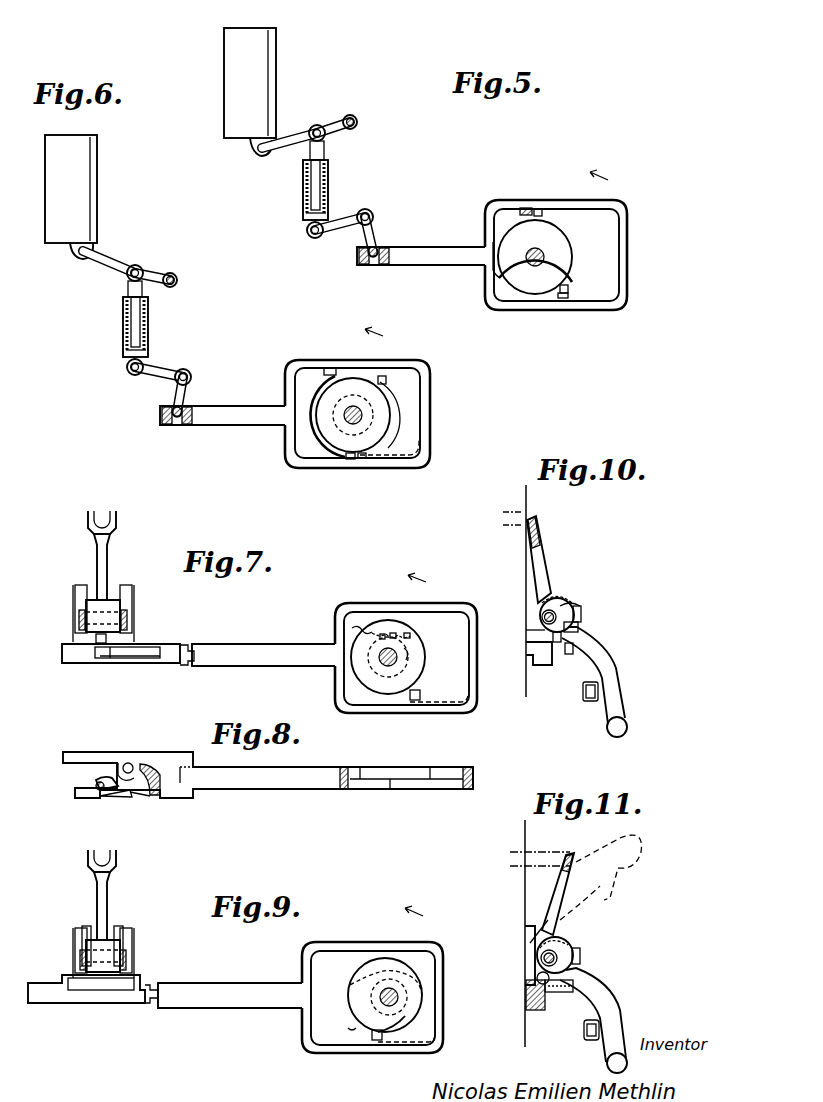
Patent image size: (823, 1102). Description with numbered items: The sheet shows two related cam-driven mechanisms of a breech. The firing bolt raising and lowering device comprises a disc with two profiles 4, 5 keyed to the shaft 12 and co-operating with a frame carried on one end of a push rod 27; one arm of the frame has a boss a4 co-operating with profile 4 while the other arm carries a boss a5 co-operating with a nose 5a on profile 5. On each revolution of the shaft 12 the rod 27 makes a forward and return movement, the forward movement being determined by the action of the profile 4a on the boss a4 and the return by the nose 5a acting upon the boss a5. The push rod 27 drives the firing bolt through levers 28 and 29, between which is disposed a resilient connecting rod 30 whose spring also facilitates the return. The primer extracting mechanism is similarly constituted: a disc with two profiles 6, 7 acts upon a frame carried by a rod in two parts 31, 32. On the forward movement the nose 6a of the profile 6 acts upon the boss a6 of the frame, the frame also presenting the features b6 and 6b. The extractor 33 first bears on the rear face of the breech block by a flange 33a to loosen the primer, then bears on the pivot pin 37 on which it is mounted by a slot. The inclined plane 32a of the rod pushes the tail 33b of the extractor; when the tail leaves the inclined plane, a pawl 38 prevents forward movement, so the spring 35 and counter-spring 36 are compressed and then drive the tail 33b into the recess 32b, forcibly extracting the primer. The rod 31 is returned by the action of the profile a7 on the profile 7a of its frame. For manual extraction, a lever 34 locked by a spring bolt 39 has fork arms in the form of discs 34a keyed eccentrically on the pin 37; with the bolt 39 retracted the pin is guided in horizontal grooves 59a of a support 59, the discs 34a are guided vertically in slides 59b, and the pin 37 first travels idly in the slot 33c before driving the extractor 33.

In FIG. 6, the profile 4 is at (390, 396).
In FIG. 5, the profile 4 is at (566, 230).
In FIG. 6, the boss a4 is at (330, 368).
In FIG. 5, the boss a4 is at (526, 208).
In FIG. 6, the profile 4a is at (382, 376).
In FIG. 5, the profile 4a is at (540, 209).
In FIG. 6, the profile 5 is at (380, 415).
In FIG. 5, the profile 5 is at (565, 262).
In FIG. 6, the nose 5a is at (349, 459).
In FIG. 5, the nose 5a is at (568, 288).
In FIG. 6, the boss a5 is at (364, 458).
In FIG. 5, the boss a5 is at (564, 298).
In FIG. 7, the profile 6 is at (402, 670).
In FIG. 7, the boss a6 is at (382, 634).
In FIG. 7, the nose 6a is at (394, 633).
In FIG. 7, the profile boss b6 is at (410, 633).
In FIG. 7, the profile 6b is at (410, 654).
In FIG. 7, the profile 7 is at (381, 685).
In FIG. 9, the profile 7 is at (354, 1008).
In FIG. 7, the profile a7 is at (344, 632).
In FIG. 9, the profile a7 is at (352, 1032).
In FIG. 7, the profile 7a is at (415, 700).
In FIG. 9, the profile 7a is at (378, 1040).
In FIG. 6, the shaft 12 is at (347, 422).
In FIG. 5, the shaft 12 is at (527, 264).
In FIG. 7, the shaft 12 is at (378, 663).
In FIG. 9, the shaft 12 is at (393, 1008).
In FIG. 6, the push rod 27 is at (242, 413).
In FIG. 5, the push rod 27 is at (443, 250).
In FIG. 6, the lever 28 is at (186, 392).
In FIG. 5, the lever 28 is at (374, 230).
In FIG. 6, the lever 29 is at (112, 268).
In FIG. 5, the lever 29 is at (288, 145).
In FIG. 6, the resilient connecting rod 30 is at (149, 316).
In FIG. 5, the resilient connecting rod 30 is at (330, 177).
In FIG. 7, the rod 31 is at (271, 650).
In FIG. 8, the rod 31 is at (283, 778).
In FIG. 9, the rod 31 is at (224, 996).
In FIG. 7, the rod 32 is at (68, 648).
In FIG. 9, the rod 32 is at (62, 995).
In FIG. 8, the inclined plane 32a is at (98, 795).
In FIG. 8, the recess 32b is at (140, 762).
In FIG. 7, the extractor 33 is at (108, 556).
In FIG. 9, the extractor 33 is at (103, 911).
In FIG. 10, the extractor 33 is at (540, 566).
In FIG. 11, the extractor 33 is at (574, 866).
In FIG. 10, the flange 33a is at (537, 548).
In FIG. 7, the extractor tail 33b is at (97, 643).
In FIG. 8, the extractor tail 33b is at (96, 786).
In FIG. 10, the extractor tail 33b is at (560, 654).
In FIG. 11, the extractor tail 33b is at (540, 976).
In FIG. 8, the slot 33c is at (150, 770).
In FIG. 10, the slot 33c is at (581, 613).
In FIG. 10, the lever 34 is at (614, 668).
In FIG. 11, the lever 34 is at (602, 982).
In FIG. 9, the discs 34a is at (86, 926).
In FIG. 10, the discs 34a is at (577, 605).
In FIG. 11, the discs 34a is at (580, 950).
In FIG. 7, the spring 35 is at (124, 657).
In FIG. 8, the spring 35 is at (128, 792).
In FIG. 7, the counter-spring 36 is at (138, 658).
In FIG. 8, the counter-spring 36 is at (142, 796).
In FIG. 10, the pivot pin 37 is at (560, 600).
In FIG. 11, the pivot pin 37 is at (566, 950).
In FIG. 8, the pawl 38 is at (128, 762).
In FIG. 10, the spring bolt 39 is at (590, 701).
In FIG. 11, the spring bolt 39 is at (584, 1037).
In FIG. 10, the support 59 is at (527, 598).
In FIG. 11, the support 59 is at (528, 935).
In FIG. 10, the horizontal grooves 59a is at (566, 606).
In FIG. 10, the slides 59b is at (537, 634).
In FIG. 11, the slides 59b is at (540, 930).